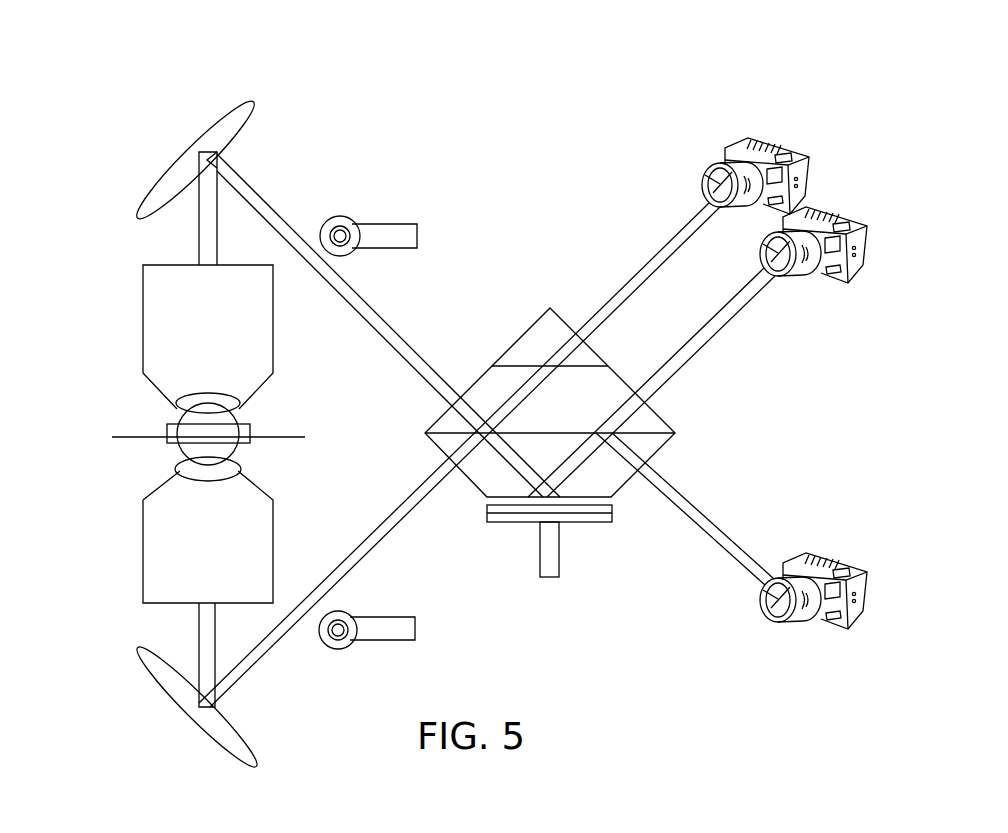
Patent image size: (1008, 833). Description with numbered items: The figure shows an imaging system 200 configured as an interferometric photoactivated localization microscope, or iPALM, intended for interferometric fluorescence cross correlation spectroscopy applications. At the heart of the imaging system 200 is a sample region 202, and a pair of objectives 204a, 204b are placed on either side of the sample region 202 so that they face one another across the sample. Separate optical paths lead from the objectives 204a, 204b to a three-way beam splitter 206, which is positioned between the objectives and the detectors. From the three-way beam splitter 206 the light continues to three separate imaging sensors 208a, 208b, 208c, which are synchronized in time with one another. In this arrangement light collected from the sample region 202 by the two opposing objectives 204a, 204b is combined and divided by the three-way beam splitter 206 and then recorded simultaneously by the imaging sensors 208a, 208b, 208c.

The imaging system 200 is at (183, 43).
The sample region 202 is at (120, 442).
The objective 204a is at (143, 320).
The objective 204b is at (143, 552).
The three-way beam splitter 206 is at (592, 522).
The imaging sensor 208a is at (845, 558).
The imaging sensor 208b is at (853, 205).
The imaging sensor 208c is at (788, 155).